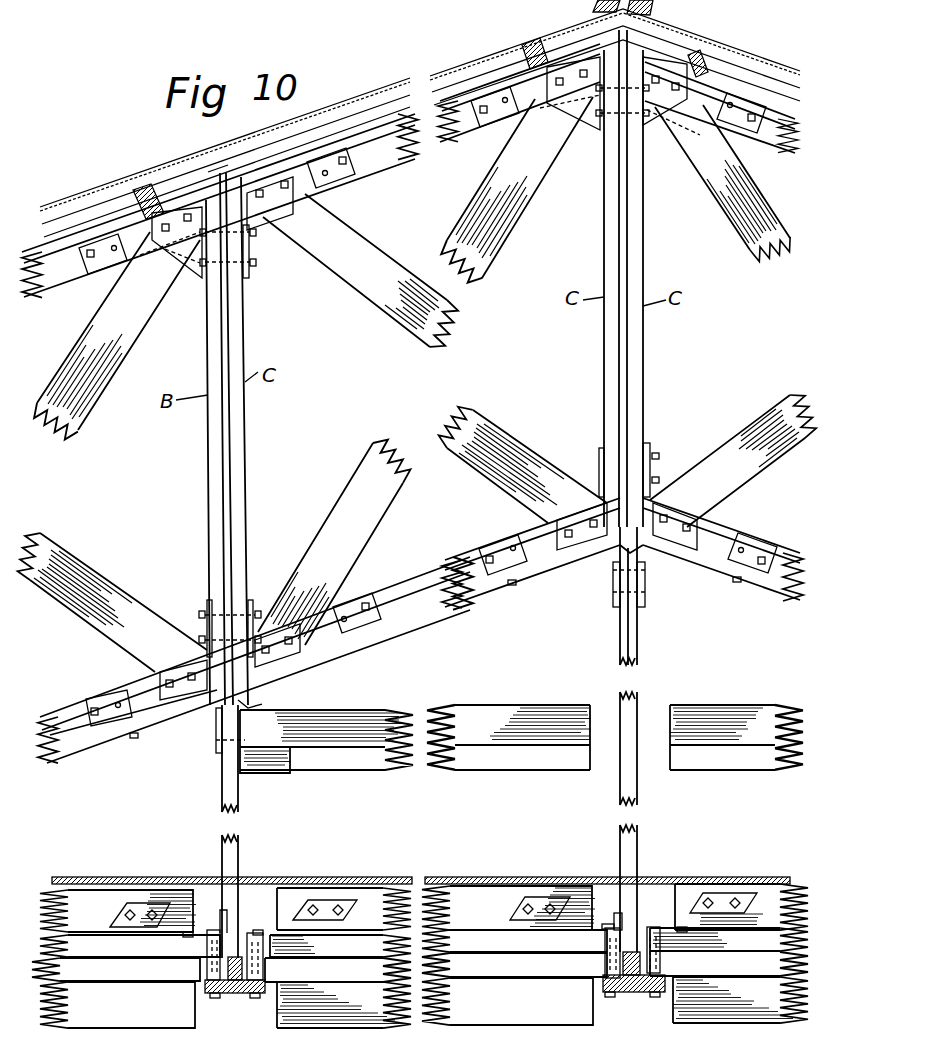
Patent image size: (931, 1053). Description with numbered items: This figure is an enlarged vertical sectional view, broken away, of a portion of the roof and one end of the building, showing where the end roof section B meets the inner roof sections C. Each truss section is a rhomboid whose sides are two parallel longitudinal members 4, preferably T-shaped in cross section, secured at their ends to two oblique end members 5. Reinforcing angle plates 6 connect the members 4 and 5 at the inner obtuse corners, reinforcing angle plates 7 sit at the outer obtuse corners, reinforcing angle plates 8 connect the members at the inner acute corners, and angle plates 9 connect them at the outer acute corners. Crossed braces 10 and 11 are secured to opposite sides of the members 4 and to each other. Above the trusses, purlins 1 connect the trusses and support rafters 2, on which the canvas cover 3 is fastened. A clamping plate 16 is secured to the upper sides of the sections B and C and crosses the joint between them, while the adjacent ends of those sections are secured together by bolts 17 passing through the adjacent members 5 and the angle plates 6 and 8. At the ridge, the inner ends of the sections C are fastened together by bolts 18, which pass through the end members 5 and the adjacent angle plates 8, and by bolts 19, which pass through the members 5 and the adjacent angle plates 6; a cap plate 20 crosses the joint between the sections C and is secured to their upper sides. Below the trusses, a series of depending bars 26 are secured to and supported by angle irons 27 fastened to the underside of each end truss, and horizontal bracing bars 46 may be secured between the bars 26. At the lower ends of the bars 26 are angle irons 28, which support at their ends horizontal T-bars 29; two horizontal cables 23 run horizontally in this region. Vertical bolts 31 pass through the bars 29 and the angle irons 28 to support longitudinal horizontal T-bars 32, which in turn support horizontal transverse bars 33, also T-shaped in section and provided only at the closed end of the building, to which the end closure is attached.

The purlin 1 is at (142, 188).
The rafter 2 is at (452, 72).
The canvas cover 3 is at (392, 86).
The longitudinal member 4 is at (380, 160).
The end member 5 is at (216, 332).
The reinforcing angle plate 6 is at (249, 276).
The reinforcing angle plate 7 is at (525, 47).
The reinforcing angle plate 8 is at (200, 270).
The angle plate 9 is at (244, 696).
The crossed brace 10 is at (100, 396).
The crossed brace 11 is at (390, 253).
The clamping plate 16 is at (212, 170).
The bolt 17 is at (257, 240).
The bolt 18 is at (680, 112).
The bolt 19 is at (660, 456).
The cap plate 20 is at (700, 48).
The horizontal cable 23 is at (325, 877).
The depending bar 26 is at (225, 812).
The angle iron 27 is at (612, 585).
The angle iron 28 is at (235, 915).
The horizontal T-bar 29 is at (110, 890).
The vertical bolt 31 is at (222, 940).
The longitudinal horizontal T-bar 32 is at (237, 994).
The horizontal transverse bar 33 is at (140, 1000).
The horizontal bracing bar 46 is at (508, 772).